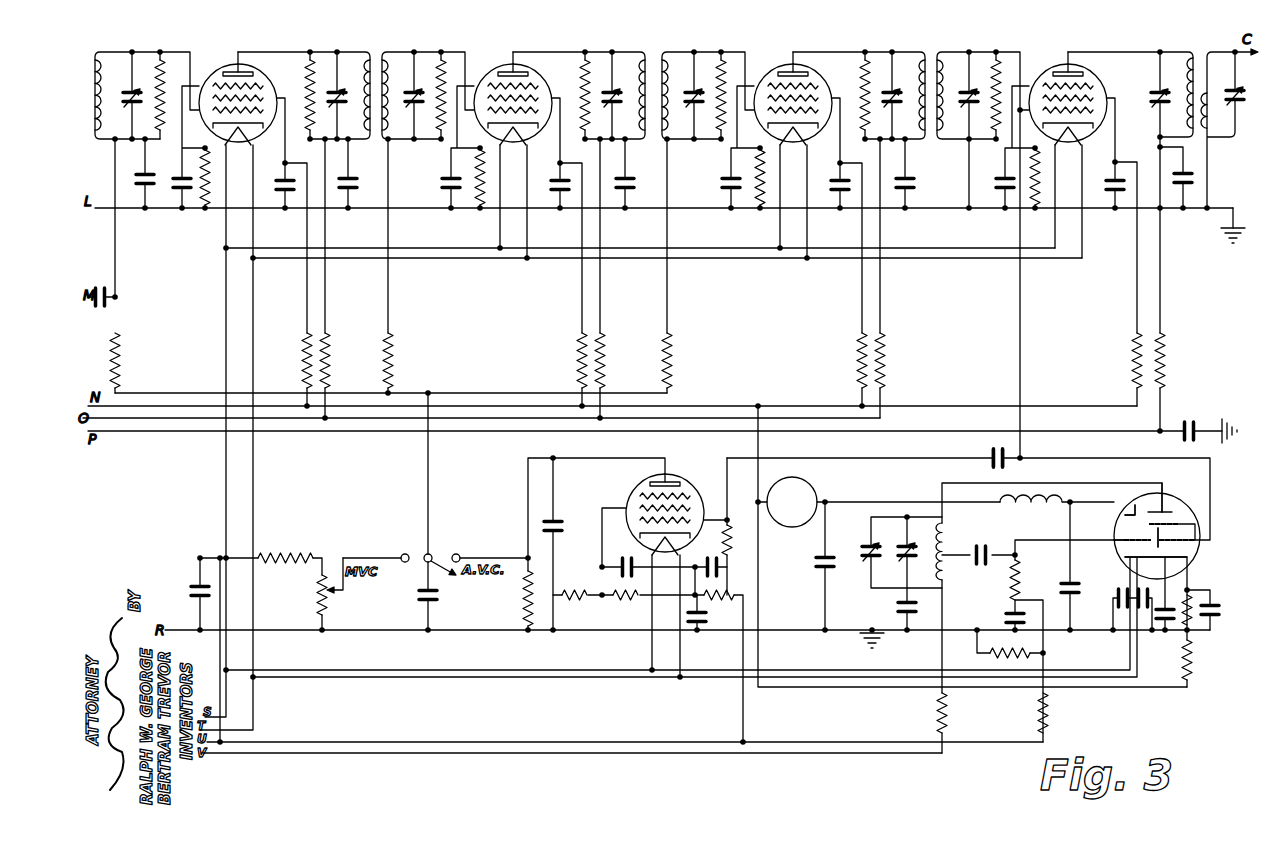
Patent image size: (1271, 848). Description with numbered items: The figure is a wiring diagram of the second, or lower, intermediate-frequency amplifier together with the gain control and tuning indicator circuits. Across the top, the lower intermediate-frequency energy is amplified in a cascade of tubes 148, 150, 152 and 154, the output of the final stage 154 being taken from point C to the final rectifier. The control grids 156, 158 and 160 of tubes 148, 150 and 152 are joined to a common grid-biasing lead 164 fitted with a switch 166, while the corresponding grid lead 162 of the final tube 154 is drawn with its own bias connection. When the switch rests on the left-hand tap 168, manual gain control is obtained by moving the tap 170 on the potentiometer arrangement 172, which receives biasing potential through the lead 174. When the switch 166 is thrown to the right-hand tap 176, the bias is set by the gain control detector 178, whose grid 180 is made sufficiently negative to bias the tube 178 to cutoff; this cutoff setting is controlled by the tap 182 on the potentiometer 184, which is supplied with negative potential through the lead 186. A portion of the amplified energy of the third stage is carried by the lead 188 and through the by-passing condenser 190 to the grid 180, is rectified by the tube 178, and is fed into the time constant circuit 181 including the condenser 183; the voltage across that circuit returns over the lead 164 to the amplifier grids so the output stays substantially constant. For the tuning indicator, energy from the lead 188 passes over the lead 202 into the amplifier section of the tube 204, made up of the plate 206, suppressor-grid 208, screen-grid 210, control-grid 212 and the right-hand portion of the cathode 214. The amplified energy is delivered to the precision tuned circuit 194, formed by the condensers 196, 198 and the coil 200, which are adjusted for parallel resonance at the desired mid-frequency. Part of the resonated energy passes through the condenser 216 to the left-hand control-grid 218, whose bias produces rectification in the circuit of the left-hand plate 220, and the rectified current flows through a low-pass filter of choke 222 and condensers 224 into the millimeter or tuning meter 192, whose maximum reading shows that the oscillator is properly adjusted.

The lower intermediate-frequency amplifier tube 148 is at (216, 62).
The lower intermediate-frequency amplifier tube 150 is at (491, 62).
The lower intermediate-frequency amplifier tube 152 is at (771, 62).
The lower intermediate-frequency amplifier tube 154 is at (1046, 62).
The control grid 156 is at (282, 100).
The control grid 158 is at (557, 100).
The control grid 160 is at (837, 100).
The screen grid lead 162 is at (1112, 100).
The common grid-biasing lead 164 is at (431, 500).
The switch 166 is at (424, 556).
The tap 168 is at (401, 564).
The tap 170 is at (333, 588).
The potentiometer arrangement 172 is at (318, 600).
The lead 174 is at (219, 562).
The tap 176 is at (457, 554).
The gain control detector 178 is at (684, 486).
The grid 180 is at (692, 518).
The time constant circuit 181 is at (540, 515).
The tap 182 is at (727, 585).
The condenser 183 is at (416, 600).
The potentiometer 184 is at (736, 603).
The lead 186 is at (741, 702).
The lead 188 is at (1021, 335).
The by-passing condenser 190 is at (990, 452).
The millimeter (tuning meter) 192 is at (812, 484).
The tuned circuit 194 is at (893, 525).
The condenser 196 is at (868, 558).
The condenser 198 is at (900, 572).
The coil 200 is at (950, 560).
The lead 202 is at (1067, 458).
The tube 204 is at (1170, 488).
The plate 206 is at (1150, 515).
The suppressor-grid 208 is at (1178, 524).
The screen-grid 210 is at (1200, 528).
The control-grid 212 is at (1200, 545).
The cathode 214 is at (1190, 560).
The condenser 216 is at (993, 531).
The left-hand control-grid 218 is at (1125, 556).
The left-hand plate 220 is at (1118, 525).
The choke 222 is at (1010, 505).
The condensers 224 is at (817, 577).